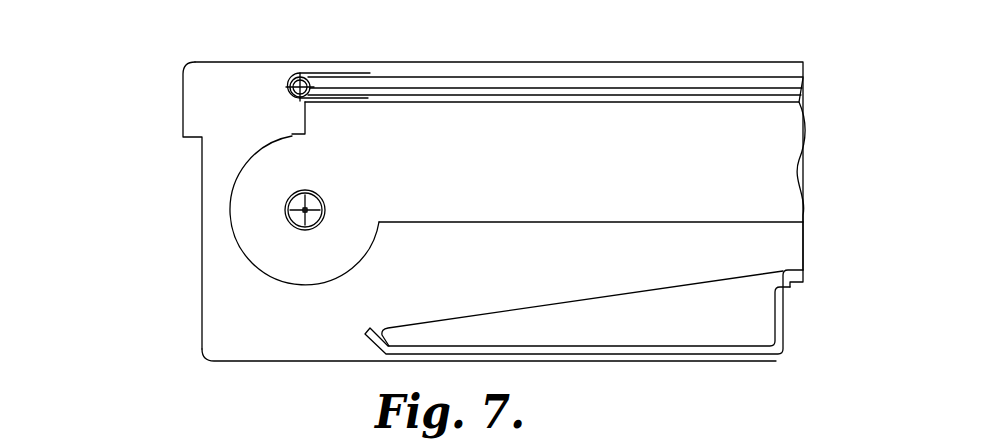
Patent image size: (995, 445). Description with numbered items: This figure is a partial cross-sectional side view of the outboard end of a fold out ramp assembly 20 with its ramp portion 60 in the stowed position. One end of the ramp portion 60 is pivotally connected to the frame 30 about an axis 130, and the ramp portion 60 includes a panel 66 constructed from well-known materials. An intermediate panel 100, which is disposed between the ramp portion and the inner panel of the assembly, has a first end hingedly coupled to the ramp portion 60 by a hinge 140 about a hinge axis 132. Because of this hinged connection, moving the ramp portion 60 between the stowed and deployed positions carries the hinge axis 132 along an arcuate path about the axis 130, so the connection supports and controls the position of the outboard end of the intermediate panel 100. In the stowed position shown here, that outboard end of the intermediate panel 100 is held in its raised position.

The ramp assembly 20 is at (131, 155).
The frame 30 is at (205, 354).
The ramp portion 60 is at (773, 225).
The panel 66 is at (531, 76).
The intermediate panel 100 is at (578, 88).
The axis 130 is at (288, 197).
The hinge axis 132 is at (297, 77).
The hinge 140 is at (344, 72).